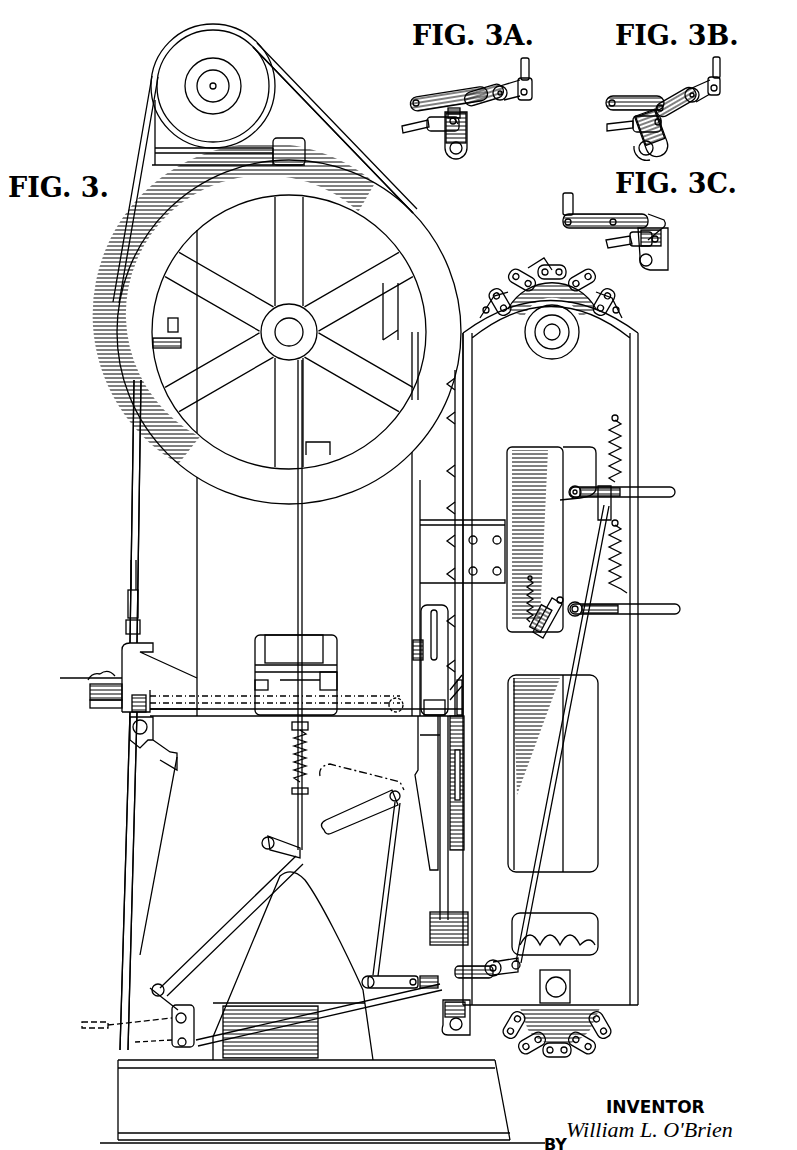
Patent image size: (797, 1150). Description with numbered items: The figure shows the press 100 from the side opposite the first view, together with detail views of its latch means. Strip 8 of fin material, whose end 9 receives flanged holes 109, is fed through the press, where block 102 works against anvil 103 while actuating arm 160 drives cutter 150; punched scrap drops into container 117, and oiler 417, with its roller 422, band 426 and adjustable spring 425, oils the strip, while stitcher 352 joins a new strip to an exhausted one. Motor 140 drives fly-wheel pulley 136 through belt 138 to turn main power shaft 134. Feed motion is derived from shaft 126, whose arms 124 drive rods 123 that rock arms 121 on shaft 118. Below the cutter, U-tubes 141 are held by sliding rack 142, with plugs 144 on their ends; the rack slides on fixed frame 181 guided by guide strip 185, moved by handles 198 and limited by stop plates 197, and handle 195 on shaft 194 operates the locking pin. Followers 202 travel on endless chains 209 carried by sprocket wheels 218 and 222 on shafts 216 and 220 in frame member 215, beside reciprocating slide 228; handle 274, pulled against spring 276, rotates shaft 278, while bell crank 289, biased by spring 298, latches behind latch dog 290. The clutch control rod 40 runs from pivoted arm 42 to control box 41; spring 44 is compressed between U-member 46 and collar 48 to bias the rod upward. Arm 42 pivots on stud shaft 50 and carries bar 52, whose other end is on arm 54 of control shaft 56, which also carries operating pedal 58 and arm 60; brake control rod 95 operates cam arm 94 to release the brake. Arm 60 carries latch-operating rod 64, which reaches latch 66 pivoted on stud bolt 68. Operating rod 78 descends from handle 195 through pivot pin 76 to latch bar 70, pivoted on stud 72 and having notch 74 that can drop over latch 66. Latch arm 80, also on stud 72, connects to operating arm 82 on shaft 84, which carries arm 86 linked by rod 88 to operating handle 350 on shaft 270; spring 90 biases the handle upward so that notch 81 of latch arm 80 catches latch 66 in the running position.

In FIG. 3, the strip of fin material 8 is at (58, 678).
In FIG. 3, the strip end 9 is at (464, 678).
In FIG. 3, the rod 40 is at (297, 552).
In FIG. 3, the control box 41 is at (318, 443).
In FIG. 3, the pivoted arm 42 is at (296, 846).
In FIG. 3, the spring 44 is at (293, 754).
In FIG. 3, the fixed U-member 46 is at (290, 790).
In FIG. 3, the collar 48 is at (290, 728).
In FIG. 3, the stud shaft 50 is at (262, 846).
In FIG. 3, the bar 52 is at (232, 918).
In FIG. 3, the arm 54 is at (172, 1000).
In FIG. 3, the control shaft 56 is at (190, 1010).
In FIG. 3, the operating pedal 58 is at (94, 1021).
In FIG. 3, the arm 60 is at (175, 1038).
In FIG. 3, the latch-operating rod 64 is at (280, 1025).
In FIG. 3A, the latch-operating rod 64 is at (410, 134).
In FIG. 3B, the latch-operating rod 64 is at (606, 126).
In FIG. 3C, the latch-operating rod 64 is at (606, 242).
In FIG. 3, the latch 66 is at (440, 1022).
In FIG. 3A, the latch 66 is at (468, 142).
In FIG. 3B, the latch 66 is at (664, 146).
In FIG. 3C, the latch 66 is at (668, 256).
In FIG. 3, the stud bolt 68 is at (448, 1030).
In FIG. 3A, the stud bolt 68 is at (450, 154).
In FIG. 3B, the stud bolt 68 is at (640, 148).
In FIG. 3C, the stud bolt 68 is at (640, 260).
In FIG. 3, the latch bar 70 is at (388, 975).
In FIG. 3C, the latch bar 70 is at (594, 210).
In FIG. 3, the stud 72 is at (413, 977).
In FIG. 3A, the stud 72 is at (412, 103).
In FIG. 3B, the stud 72 is at (606, 102).
In FIG. 3C, the stud 72 is at (613, 218).
In FIG. 3, the notch 74 is at (434, 975).
In FIG. 3C, the notch 74 is at (640, 216).
In FIG. 3, the pivot pin 76 is at (360, 982).
In FIG. 3, the operating rod 78 is at (380, 874).
In FIG. 3C, the operating rod 78 is at (564, 196).
In FIG. 3, the latch arm 80 is at (462, 979).
In FIG. 3A, the latch arm 80 is at (450, 94).
In FIG. 3B, the latch arm 80 is at (620, 95).
In FIG. 3A, the notch 81 is at (470, 108).
In FIG. 3B, the notch 81 is at (656, 104).
In FIG. 3, the operating arm 82 is at (488, 960).
In FIG. 3A, the operating arm 82 is at (486, 84).
In FIG. 3B, the operating arm 82 is at (668, 90).
In FIG. 3, the shaft 84 is at (496, 976).
In FIG. 3A, the shaft 84 is at (502, 102).
In FIG. 3B, the shaft 84 is at (692, 102).
In FIG. 3, the arm 86 is at (516, 972).
In FIG. 3A, the arm 86 is at (512, 82).
In FIG. 3B, the arm 86 is at (704, 82).
In FIG. 3, the rod 88 is at (530, 893).
In FIG. 3A, the rod 88 is at (531, 66).
In FIG. 3B, the rod 88 is at (722, 66).
In FIG. 3, the spring 90 is at (620, 462).
In FIG. 3, the cam arm 94 is at (168, 340).
In FIG. 3, the brake control rod 95 is at (137, 526).
In FIG. 3, the press 100 is at (109, 458).
In FIG. 3, the block 102 is at (256, 653).
In FIG. 3, the anvil 103 is at (256, 689).
In FIG. 3, the flanged holes 109 is at (326, 678).
In FIG. 3, the container 117 is at (322, 1062).
In FIG. 3, the shaft 118 is at (388, 703).
In FIG. 3, the arms 121 is at (283, 680).
In FIG. 3, the rods 123 is at (188, 716).
In FIG. 3, the arms 124 is at (136, 712).
In FIG. 3, the shaft 126 is at (133, 734).
In FIG. 3, the main power shaft 134 is at (291, 330).
In FIG. 3, the fly-wheel pulley 136 is at (408, 224).
In FIG. 3, the belt 138 is at (304, 128).
In FIG. 3, the motor 140 is at (168, 72).
In FIG. 3, the U-tubes 141 is at (462, 706).
In FIG. 3, the sliding rack 142 is at (472, 846).
In FIG. 3, the round-nosed plug 144 is at (462, 688).
In FIG. 3, the cutter 150 is at (455, 637).
In FIG. 3, the actuating arm 160 is at (414, 650).
In FIG. 3, the fixed frame 181 is at (428, 740).
In FIG. 3, the guide strip 185 is at (444, 806).
In FIG. 3, the shaft 194 is at (412, 782).
In FIG. 3, the handle 195 is at (368, 796).
In FIG. 3, the stop plates 197 is at (440, 912).
In FIG. 3, the handles 198 is at (464, 778).
In FIG. 3, the followers 202 is at (458, 484).
In FIG. 3, the endless chains 209 is at (506, 284).
In FIG. 3, the frame member 215 is at (625, 708).
In FIG. 3, the shaft 216 is at (556, 338).
In FIG. 3, the sprocket wheels 218 is at (530, 268).
In FIG. 3, the shaft 220 is at (562, 982).
In FIG. 3, the sprocket wheels 222 is at (565, 930).
In FIG. 3, the reciprocating slide 228 is at (554, 466).
In FIG. 3, the shaft 270 is at (568, 497).
In FIG. 3, the handle 274 is at (646, 616).
In FIG. 3, the spring 276 is at (620, 577).
In FIG. 3, the horizontal shaft 278 is at (571, 618).
In FIG. 3, the bell crank 289 is at (542, 596).
In FIG. 3, the latch dog 290 is at (562, 596).
In FIG. 3, the spring 298 is at (537, 584).
In FIG. 3, the operating handle 350 is at (640, 498).
In FIG. 3, the stitcher 352 is at (158, 632).
In FIG. 3, the oiler 417 is at (88, 707).
In FIG. 3, the roller 422 is at (111, 665).
In FIG. 3, the adjustable spring 425 is at (88, 690).
In FIG. 3, the band 426 is at (90, 680).